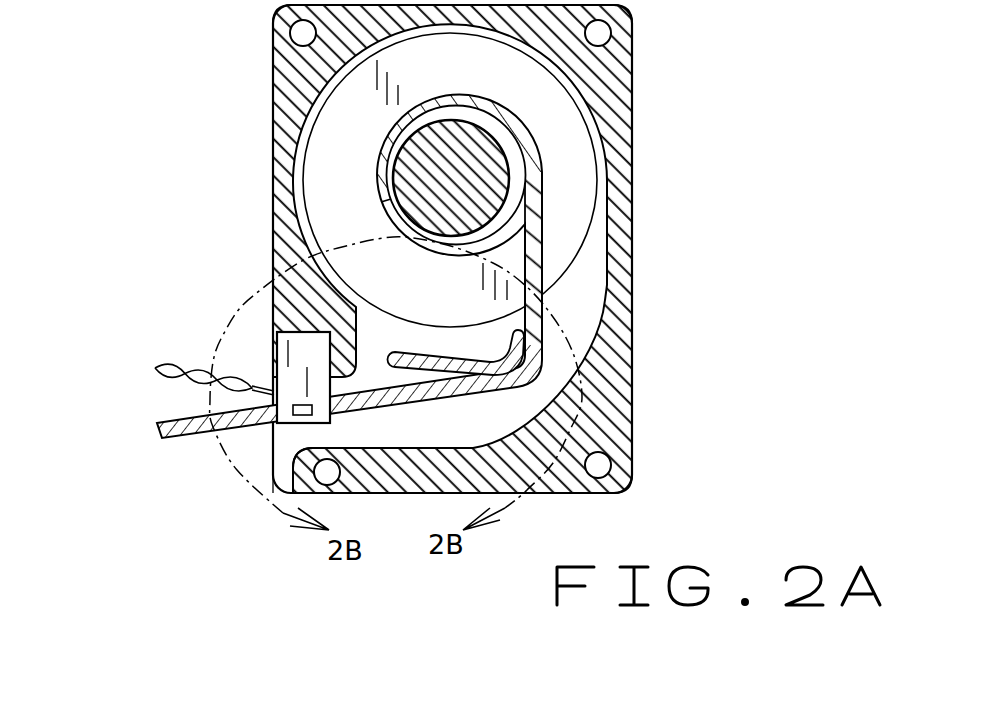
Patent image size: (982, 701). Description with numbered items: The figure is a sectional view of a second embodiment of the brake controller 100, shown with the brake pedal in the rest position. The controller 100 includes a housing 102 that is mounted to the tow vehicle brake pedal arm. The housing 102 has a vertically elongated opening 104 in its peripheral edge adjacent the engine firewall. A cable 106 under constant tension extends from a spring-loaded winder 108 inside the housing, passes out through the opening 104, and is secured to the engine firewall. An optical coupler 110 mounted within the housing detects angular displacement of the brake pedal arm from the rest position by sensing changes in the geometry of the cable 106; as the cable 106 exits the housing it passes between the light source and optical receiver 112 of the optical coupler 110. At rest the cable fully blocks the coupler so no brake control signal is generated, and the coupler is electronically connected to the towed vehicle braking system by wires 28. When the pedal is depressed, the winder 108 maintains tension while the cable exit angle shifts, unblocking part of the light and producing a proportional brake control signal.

The wires 28 is at (155, 368).
The controller 100 is at (662, 192).
The housing 102 is at (603, 402).
The vertically elongated opening 104 is at (256, 447).
The cable 106 is at (177, 420).
The spring-loaded winder 108 is at (477, 163).
The optical coupler 110 is at (302, 352).
The light source and optical receiver 112 is at (297, 403).